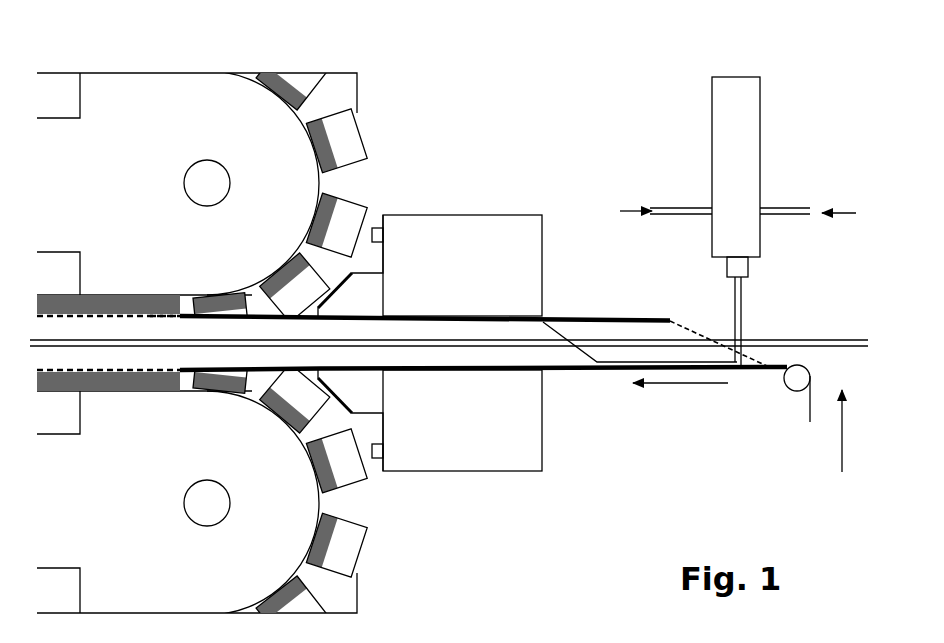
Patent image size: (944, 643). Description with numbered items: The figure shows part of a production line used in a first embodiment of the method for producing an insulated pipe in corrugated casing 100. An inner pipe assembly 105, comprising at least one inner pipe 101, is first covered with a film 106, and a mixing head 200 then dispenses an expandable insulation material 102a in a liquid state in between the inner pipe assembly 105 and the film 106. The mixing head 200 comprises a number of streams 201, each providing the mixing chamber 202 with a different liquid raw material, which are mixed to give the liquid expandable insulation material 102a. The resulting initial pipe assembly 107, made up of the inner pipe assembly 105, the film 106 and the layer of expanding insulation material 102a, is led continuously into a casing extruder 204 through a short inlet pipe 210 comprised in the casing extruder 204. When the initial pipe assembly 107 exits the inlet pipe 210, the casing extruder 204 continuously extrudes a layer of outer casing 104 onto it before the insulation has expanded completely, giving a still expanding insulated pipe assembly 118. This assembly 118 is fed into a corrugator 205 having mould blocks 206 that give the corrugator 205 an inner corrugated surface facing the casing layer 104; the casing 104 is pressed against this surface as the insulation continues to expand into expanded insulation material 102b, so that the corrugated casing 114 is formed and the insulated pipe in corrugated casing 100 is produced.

The insulated pipe in corrugated casing 100 is at (48, 333).
The inner pipe 101 is at (762, 346).
The inner pipe assembly 105 is at (762, 340).
The expandable insulation material 102a is at (730, 320).
The expanded insulation material 102b is at (97, 335).
The outer casing layer 104 is at (323, 290).
The film 106 is at (803, 400).
The initial pipe assembly 107 is at (607, 313).
The corrugated casing 114 is at (158, 320).
The still expanding insulated pipe assembly 118 is at (232, 350).
The mixing head 200 is at (723, 184).
The streams 201 is at (703, 200).
The mixing chamber 202 is at (725, 137).
The casing extruder 204 is at (435, 233).
The corrugator 205 is at (238, 179).
The mould blocks 206 is at (331, 140).
The short inlet pipe 210 is at (579, 370).